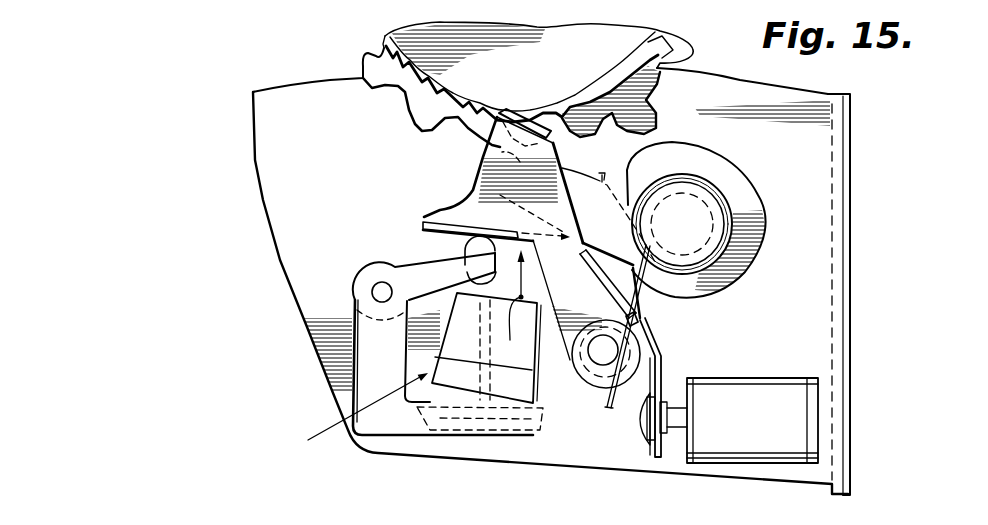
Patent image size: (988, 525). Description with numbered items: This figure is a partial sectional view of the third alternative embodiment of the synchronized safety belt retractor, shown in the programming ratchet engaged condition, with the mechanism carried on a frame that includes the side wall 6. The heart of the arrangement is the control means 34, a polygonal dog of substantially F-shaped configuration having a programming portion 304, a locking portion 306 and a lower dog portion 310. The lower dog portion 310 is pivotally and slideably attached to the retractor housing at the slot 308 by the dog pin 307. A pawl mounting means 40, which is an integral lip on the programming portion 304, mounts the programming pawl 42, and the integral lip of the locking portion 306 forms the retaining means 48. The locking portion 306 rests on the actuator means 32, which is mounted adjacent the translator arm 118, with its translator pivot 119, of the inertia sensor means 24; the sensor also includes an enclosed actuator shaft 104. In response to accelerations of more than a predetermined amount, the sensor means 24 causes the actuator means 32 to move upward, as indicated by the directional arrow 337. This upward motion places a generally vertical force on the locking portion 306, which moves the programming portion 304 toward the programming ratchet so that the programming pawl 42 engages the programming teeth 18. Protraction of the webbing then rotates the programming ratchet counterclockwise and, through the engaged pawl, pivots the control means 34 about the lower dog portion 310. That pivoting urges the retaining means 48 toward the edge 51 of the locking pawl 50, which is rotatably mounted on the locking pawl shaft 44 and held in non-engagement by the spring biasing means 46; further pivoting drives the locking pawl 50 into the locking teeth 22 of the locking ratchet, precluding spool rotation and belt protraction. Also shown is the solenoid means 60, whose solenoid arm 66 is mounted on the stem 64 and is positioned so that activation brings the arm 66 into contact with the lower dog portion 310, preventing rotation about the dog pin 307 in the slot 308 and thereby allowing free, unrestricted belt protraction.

The side wall 6 is at (850, 193).
The programming teeth 18 is at (395, 68).
The locking teeth 22 is at (690, 46).
The inertia sensor means 24 is at (411, 377).
The actuator means 32 is at (468, 245).
The control means 34 is at (612, 254).
The pawl mounting means 40 is at (524, 120).
The programming pawl 42 is at (516, 120).
The locking pawl shaft 44 is at (750, 243).
The spring biasing means 46 is at (638, 298).
The retaining means 48 is at (430, 210).
The locking pawl 50 is at (560, 157).
The edge of locking pawl 51 is at (582, 257).
The solenoid means 60 is at (806, 372).
The stem 64 is at (680, 418).
The solenoid arm 66 is at (663, 452).
The actuator shaft 104 is at (477, 380).
The translator arm 118 is at (420, 303).
The translator pivot 119 is at (372, 290).
The programming portion 304 is at (497, 145).
The locking portion 306 is at (440, 200).
The dog pin 307 is at (602, 352).
The slot 308 is at (646, 434).
The lower dog portion 310 is at (640, 325).
The directional arrow 337 is at (508, 298).